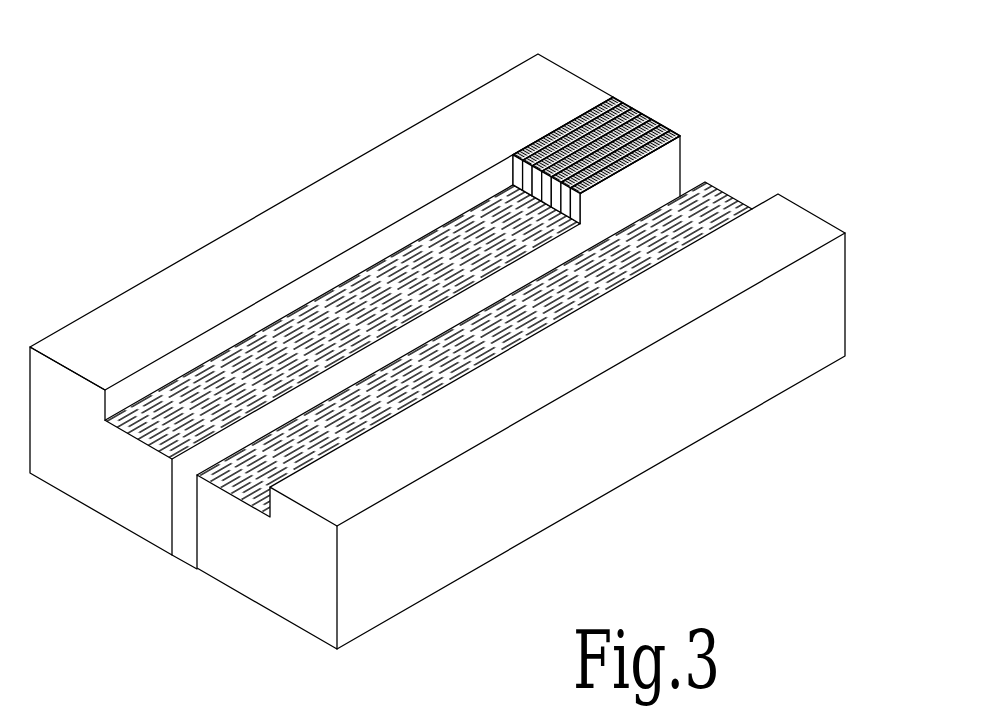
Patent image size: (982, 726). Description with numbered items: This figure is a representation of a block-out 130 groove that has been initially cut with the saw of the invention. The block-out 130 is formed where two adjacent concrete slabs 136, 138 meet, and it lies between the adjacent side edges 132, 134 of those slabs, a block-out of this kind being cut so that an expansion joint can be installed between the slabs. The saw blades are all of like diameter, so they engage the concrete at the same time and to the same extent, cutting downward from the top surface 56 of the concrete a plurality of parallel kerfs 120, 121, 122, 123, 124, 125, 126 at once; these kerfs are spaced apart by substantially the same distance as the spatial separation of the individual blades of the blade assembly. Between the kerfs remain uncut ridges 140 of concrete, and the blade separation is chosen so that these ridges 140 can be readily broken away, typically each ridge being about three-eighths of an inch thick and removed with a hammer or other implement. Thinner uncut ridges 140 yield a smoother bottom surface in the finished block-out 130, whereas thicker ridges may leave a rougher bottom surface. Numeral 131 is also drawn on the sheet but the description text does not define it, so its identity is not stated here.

The top surface 56 is at (547, 78).
The kerf 120 is at (600, 97).
The kerf 121 is at (631, 114).
The kerf 122 is at (643, 113).
The kerf 123 is at (653, 117).
The kerf 124 is at (660, 121).
The kerf 125 is at (666, 129).
The kerf 126 is at (673, 131).
The block-out 130 is at (483, 217).
The second groove floor 131 is at (725, 202).
The side edge 132 is at (680, 148).
The side edge 134 is at (695, 184).
The concrete slab 136 is at (480, 83).
The concrete slab 138 is at (812, 218).
The uncut ridge 140 is at (503, 163).